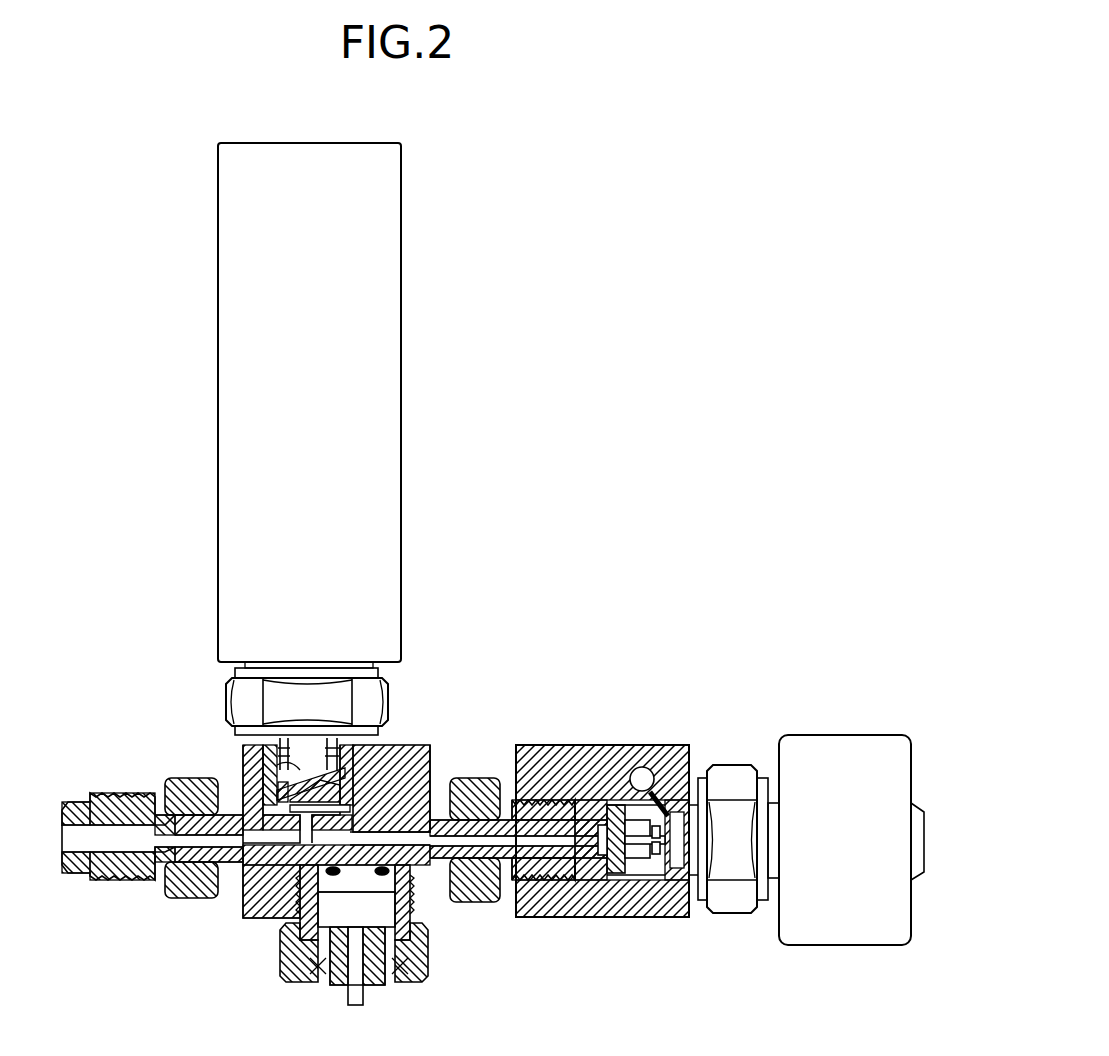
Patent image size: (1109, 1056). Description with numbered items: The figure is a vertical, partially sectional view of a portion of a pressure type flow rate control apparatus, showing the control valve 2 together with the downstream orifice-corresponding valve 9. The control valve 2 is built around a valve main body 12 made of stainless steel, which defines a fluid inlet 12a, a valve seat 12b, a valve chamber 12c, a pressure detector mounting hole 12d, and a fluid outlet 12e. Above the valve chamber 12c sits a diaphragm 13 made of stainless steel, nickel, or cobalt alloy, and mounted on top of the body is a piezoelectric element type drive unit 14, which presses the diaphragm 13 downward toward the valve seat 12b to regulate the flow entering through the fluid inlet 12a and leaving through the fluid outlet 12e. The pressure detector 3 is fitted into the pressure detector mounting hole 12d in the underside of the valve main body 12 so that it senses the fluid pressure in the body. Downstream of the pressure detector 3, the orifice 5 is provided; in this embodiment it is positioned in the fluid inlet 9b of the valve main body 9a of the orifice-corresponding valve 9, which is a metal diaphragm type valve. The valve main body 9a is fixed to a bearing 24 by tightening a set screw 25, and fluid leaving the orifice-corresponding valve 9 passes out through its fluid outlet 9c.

The control valve 2 is at (186, 676).
The drive unit 14 is at (400, 340).
The diaphragm 13 is at (243, 835).
The valve main body 12 is at (242, 918).
The fluid inlet 12a is at (82, 845).
The valve seat 12b is at (255, 840).
The valve chamber 12c is at (367, 770).
The pressure detector mounting hole 12d is at (362, 862).
The fluid outlet 12e is at (476, 832).
The pressure detector 3 is at (300, 950).
The bearing 24 is at (418, 955).
The set screw 25 is at (485, 902).
The orifice corresponding valve 9 is at (739, 935).
The valve main body 9a is at (625, 744).
The fluid inlet 9b is at (607, 812).
The fluid outlet 9c is at (652, 770).
The orifice 5 is at (620, 873).